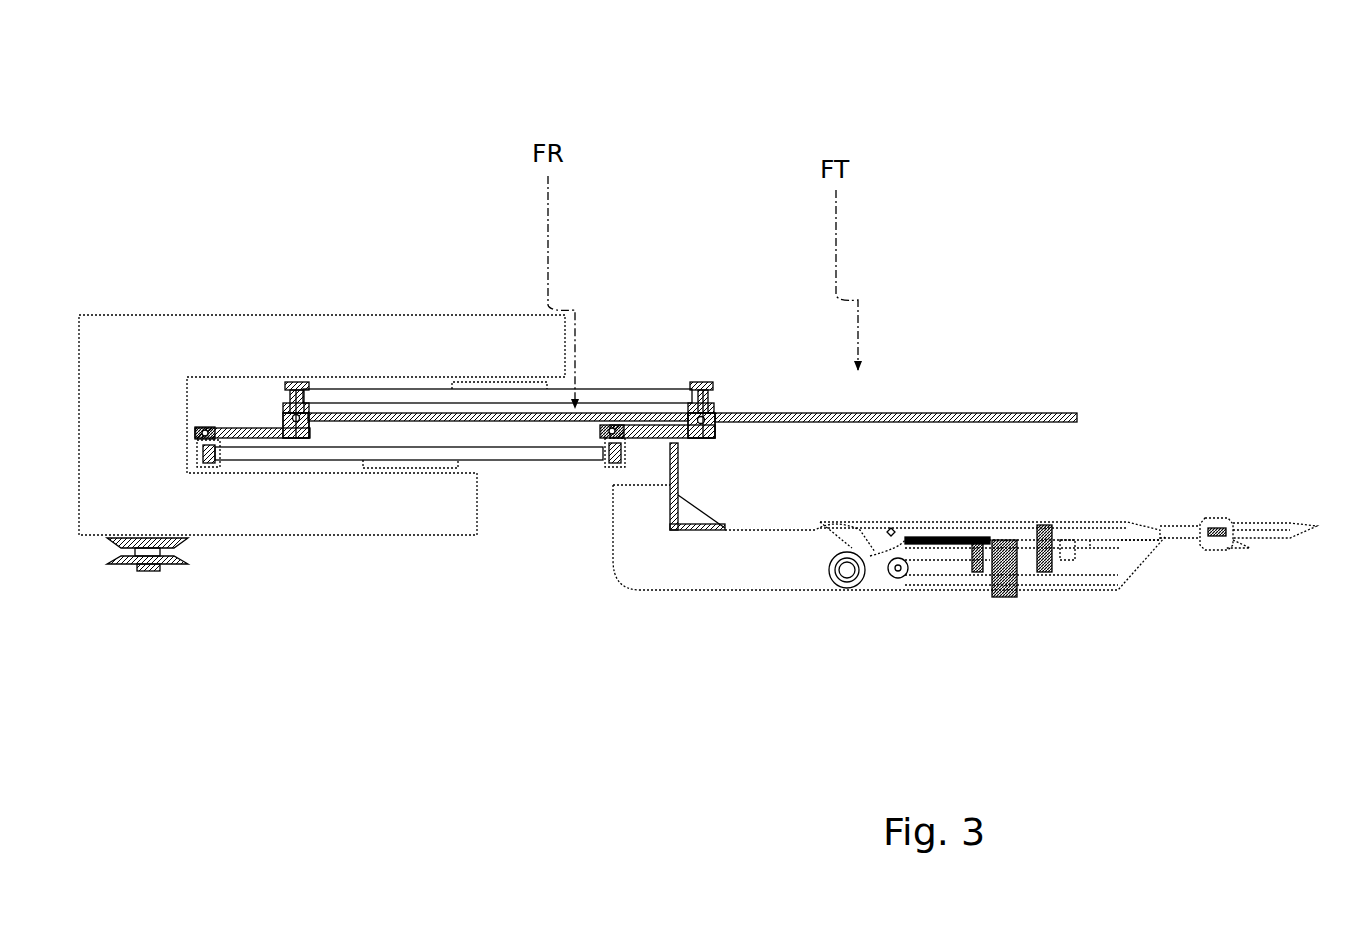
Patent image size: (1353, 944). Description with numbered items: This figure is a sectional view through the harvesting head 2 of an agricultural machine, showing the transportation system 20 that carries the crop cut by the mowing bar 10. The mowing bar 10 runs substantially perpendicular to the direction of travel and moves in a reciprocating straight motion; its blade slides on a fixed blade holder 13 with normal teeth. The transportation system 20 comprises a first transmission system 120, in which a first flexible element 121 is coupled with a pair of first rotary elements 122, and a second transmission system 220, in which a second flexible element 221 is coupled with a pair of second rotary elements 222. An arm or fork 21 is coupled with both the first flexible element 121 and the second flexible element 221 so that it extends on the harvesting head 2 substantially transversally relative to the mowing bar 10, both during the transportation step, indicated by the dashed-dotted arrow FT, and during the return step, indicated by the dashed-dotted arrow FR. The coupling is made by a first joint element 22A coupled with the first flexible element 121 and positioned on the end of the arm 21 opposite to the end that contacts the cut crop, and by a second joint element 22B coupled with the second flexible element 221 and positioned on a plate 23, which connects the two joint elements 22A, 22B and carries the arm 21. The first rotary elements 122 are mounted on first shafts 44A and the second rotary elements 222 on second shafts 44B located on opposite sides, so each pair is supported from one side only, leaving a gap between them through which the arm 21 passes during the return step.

The harvesting head 2 is at (773, 592).
The mowing bar 10 is at (1217, 514).
The fixed blade holder 13 is at (1253, 549).
The transportation system 20 is at (375, 278).
The arm or fork 21 is at (908, 412).
The first joint element 22A is at (298, 438).
The second joint element 22B is at (206, 424).
The plate 23 is at (255, 438).
The first shafts 44A is at (497, 382).
The second shafts 44B is at (410, 472).
The first transmission system 120 is at (278, 396).
The first flexible element 121 is at (700, 380).
The first rotary elements 122 is at (628, 388).
The second transmission system 220 is at (186, 452).
The second flexible element 221 is at (606, 468).
The second rotary elements 222 is at (330, 461).